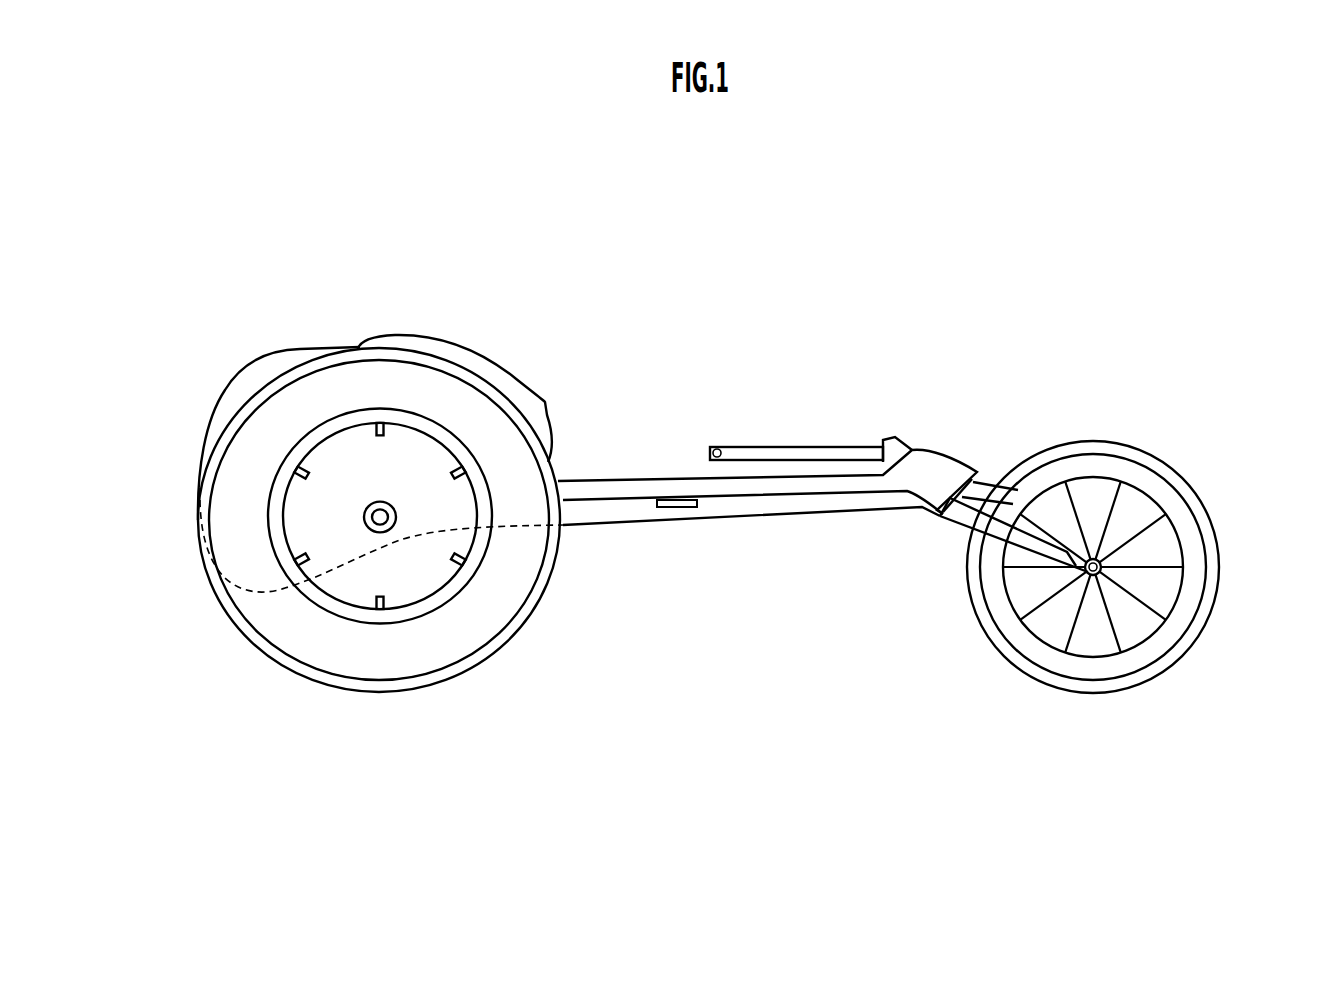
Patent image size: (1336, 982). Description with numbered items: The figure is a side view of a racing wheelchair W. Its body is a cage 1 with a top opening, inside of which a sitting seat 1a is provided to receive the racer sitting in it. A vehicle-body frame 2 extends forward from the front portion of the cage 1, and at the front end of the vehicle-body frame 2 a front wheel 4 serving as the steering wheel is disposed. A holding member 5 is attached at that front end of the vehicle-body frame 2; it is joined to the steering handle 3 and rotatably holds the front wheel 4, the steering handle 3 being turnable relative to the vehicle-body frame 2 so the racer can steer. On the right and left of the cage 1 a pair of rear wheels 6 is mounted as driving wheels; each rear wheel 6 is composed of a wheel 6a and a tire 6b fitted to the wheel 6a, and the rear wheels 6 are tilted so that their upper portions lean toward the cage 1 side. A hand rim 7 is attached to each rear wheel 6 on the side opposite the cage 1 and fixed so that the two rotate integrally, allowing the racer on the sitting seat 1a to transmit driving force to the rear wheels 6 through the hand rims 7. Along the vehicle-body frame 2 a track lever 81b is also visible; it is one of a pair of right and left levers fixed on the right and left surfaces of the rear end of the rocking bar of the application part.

The wheelchair W is at (955, 230).
The cage 1 is at (268, 352).
The sitting seat 1a is at (245, 473).
The vehicle-body frame 2 is at (683, 487).
The steering handle 3 is at (810, 443).
The front wheel 4 is at (1202, 493).
The holding member 5 is at (1010, 532).
The rear wheel 6 is at (314, 372).
The wheel 6a is at (287, 643).
The tire 6b is at (335, 680).
The hand rim 7 is at (382, 408).
The track lever 81b is at (677, 507).